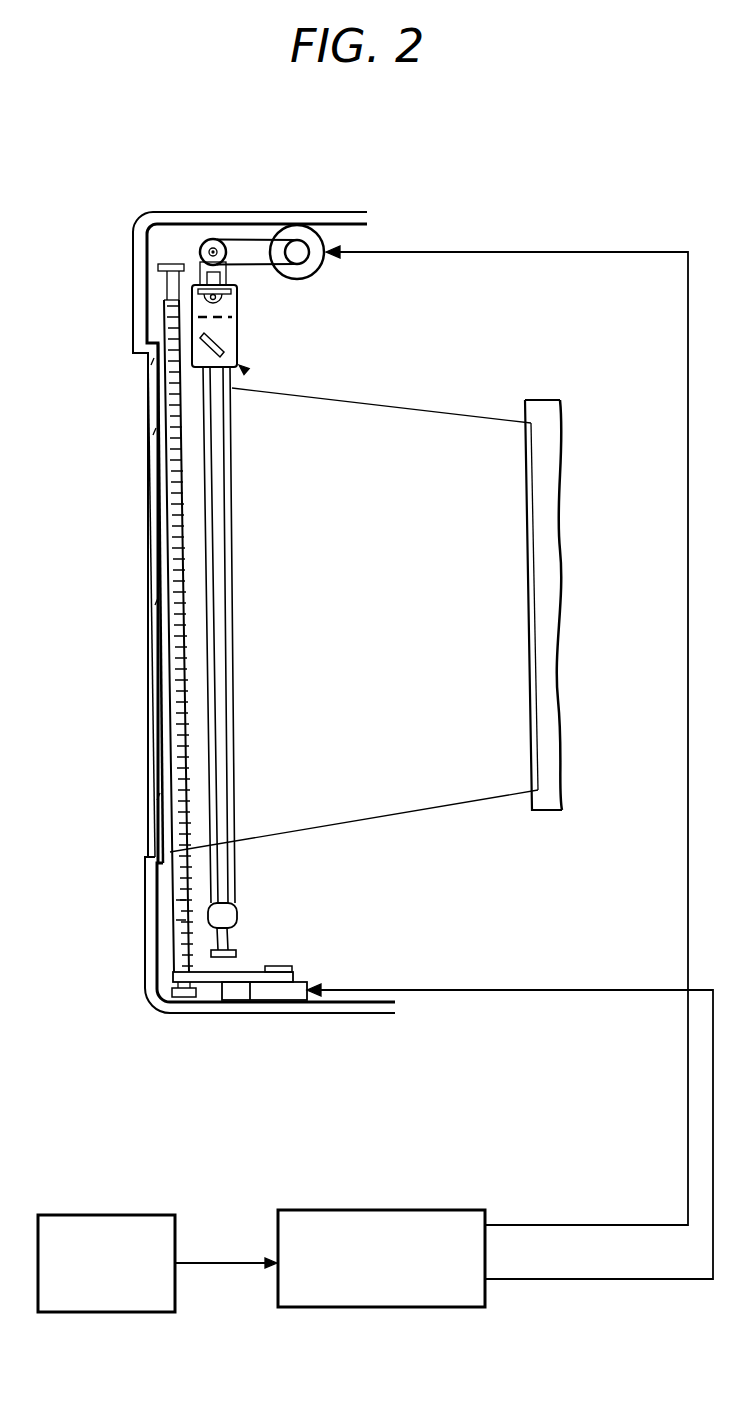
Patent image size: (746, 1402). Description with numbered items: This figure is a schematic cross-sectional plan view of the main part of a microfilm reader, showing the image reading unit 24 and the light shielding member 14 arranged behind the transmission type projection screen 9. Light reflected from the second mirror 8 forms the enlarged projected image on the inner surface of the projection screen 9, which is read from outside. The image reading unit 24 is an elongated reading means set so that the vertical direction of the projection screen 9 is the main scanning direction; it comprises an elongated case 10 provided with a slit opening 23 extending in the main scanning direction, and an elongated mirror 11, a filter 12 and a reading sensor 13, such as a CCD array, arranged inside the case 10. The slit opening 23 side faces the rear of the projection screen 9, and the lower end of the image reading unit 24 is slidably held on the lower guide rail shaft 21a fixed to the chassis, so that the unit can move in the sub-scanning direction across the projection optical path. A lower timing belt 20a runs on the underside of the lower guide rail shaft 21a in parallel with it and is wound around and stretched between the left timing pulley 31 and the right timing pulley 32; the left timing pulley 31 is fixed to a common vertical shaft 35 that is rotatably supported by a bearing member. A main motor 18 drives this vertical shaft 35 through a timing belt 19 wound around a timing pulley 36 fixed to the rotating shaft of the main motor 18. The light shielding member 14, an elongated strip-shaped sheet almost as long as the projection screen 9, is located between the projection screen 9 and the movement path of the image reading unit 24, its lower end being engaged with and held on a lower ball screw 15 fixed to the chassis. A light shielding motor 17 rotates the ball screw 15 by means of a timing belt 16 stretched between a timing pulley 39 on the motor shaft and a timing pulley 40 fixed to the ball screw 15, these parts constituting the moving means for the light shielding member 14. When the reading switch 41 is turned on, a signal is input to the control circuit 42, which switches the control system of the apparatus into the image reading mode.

The second mirror 8 is at (555, 497).
The transmission type projection screen 9 is at (150, 432).
The case 10 is at (195, 313).
The mirror 11 is at (217, 340).
The filter 12 is at (225, 316).
The reading sensor 13 is at (228, 298).
The light shielding member 14 is at (178, 338).
The ball screw 15 is at (180, 905).
The timing belt 16 is at (220, 982).
The light shielding motor 17 is at (278, 995).
The main motor 18 is at (322, 236).
The timing belt 19 is at (262, 240).
The lower timing belt 20a is at (195, 265).
The lower guide rail shaft 21a is at (233, 615).
The slit opening 23 is at (238, 346).
The image reading unit 24 is at (247, 372).
The timing pulley 31 is at (216, 249).
The timing pulley 32 is at (240, 912).
The vertical shaft 35 is at (213, 240).
The timing pulley 36 is at (304, 241).
The timing pulley 39 is at (283, 966).
The timing pulley 40 is at (175, 1014).
The reading switch 41 is at (157, 1212).
The control circuit 42 is at (450, 1208).